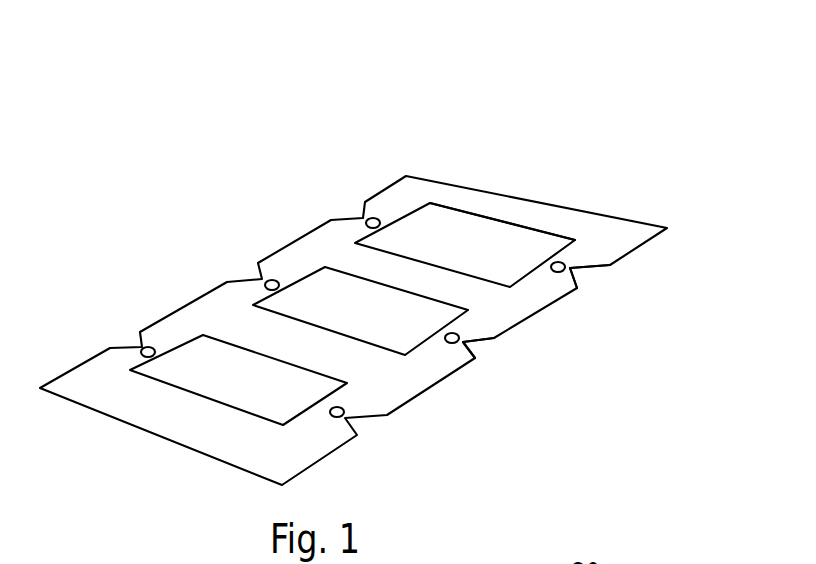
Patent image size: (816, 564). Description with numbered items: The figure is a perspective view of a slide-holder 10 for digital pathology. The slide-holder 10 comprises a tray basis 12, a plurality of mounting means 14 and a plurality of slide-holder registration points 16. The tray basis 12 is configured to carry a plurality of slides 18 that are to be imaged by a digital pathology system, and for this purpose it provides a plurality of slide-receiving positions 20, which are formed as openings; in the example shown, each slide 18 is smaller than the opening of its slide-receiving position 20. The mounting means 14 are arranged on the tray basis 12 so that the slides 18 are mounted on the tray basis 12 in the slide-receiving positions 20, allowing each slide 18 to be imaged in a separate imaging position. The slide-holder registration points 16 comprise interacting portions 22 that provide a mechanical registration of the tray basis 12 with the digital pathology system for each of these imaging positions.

The slide-holder 10 is at (566, 115).
The tray basis 12 is at (598, 213).
The mounting means 14 is at (371, 217).
The slide-holder registration points 16 is at (601, 282).
The slide 18 is at (475, 242).
The slide-receiving position 20 is at (443, 203).
The interacting portions 22 is at (482, 341).